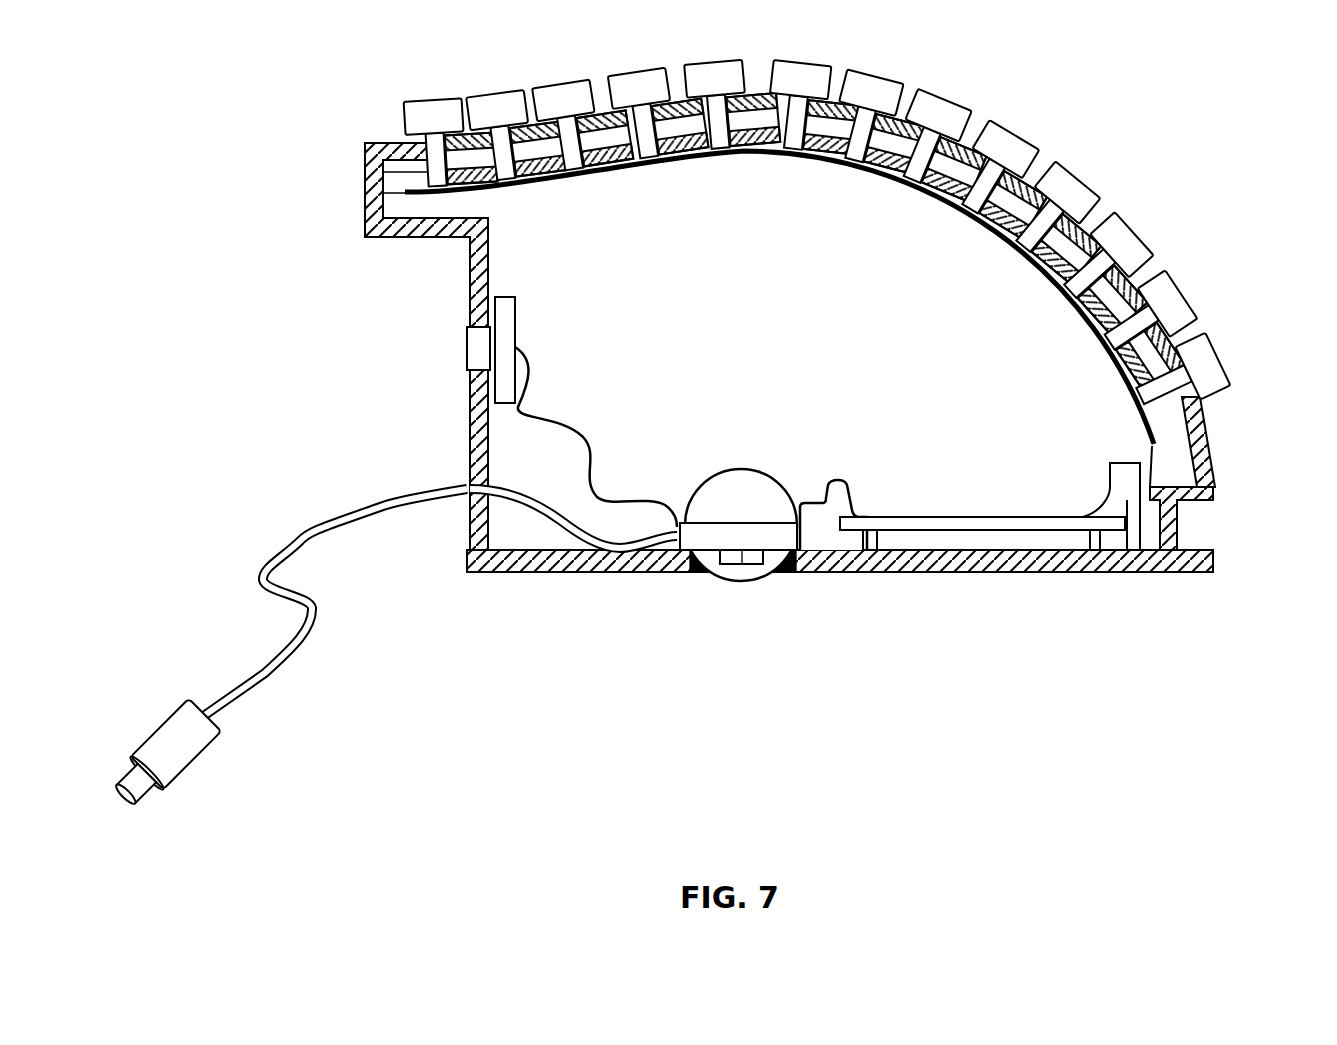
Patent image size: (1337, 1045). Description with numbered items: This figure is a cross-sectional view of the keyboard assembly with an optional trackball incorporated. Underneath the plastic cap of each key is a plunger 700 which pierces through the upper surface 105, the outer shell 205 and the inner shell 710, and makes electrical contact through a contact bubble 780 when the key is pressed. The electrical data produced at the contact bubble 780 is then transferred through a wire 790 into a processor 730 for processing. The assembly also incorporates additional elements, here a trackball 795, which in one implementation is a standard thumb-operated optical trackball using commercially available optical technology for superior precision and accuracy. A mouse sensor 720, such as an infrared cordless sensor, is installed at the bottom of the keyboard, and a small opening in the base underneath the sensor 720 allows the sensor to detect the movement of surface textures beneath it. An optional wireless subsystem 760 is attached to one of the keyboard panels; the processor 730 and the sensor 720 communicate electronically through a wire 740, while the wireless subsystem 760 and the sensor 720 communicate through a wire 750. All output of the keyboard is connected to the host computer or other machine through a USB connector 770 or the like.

The plunger 700 is at (1205, 372).
The inner shell 710 is at (380, 182).
The mouse sensor 720 is at (742, 565).
The processor 730 is at (973, 533).
The wire 740 is at (837, 483).
The wire 750 is at (580, 423).
The wireless subsystem 760 is at (468, 345).
The USB connector 770 is at (310, 624).
The contact bubble 780 is at (1143, 417).
The wire 790 is at (1140, 490).
The trackball 795 is at (765, 578).
The upper surface 105 is at (1205, 442).
The outer shell 205 is at (1178, 518).